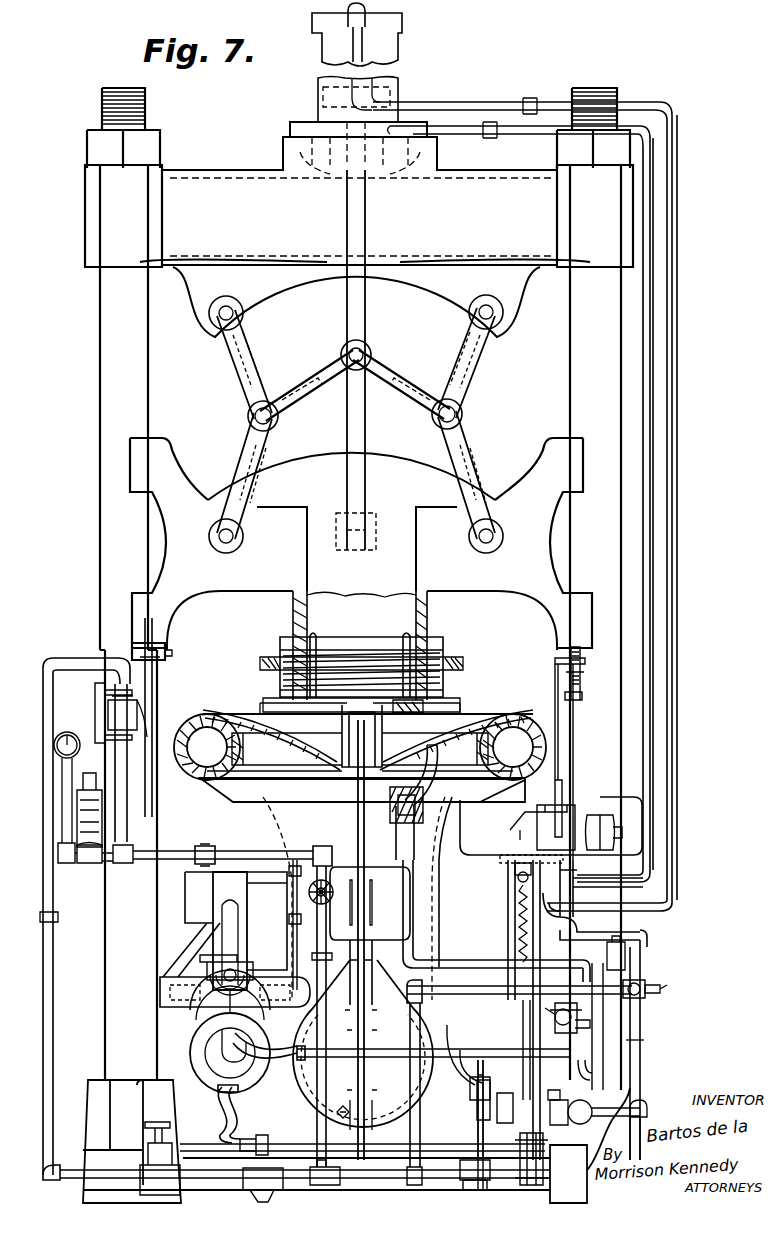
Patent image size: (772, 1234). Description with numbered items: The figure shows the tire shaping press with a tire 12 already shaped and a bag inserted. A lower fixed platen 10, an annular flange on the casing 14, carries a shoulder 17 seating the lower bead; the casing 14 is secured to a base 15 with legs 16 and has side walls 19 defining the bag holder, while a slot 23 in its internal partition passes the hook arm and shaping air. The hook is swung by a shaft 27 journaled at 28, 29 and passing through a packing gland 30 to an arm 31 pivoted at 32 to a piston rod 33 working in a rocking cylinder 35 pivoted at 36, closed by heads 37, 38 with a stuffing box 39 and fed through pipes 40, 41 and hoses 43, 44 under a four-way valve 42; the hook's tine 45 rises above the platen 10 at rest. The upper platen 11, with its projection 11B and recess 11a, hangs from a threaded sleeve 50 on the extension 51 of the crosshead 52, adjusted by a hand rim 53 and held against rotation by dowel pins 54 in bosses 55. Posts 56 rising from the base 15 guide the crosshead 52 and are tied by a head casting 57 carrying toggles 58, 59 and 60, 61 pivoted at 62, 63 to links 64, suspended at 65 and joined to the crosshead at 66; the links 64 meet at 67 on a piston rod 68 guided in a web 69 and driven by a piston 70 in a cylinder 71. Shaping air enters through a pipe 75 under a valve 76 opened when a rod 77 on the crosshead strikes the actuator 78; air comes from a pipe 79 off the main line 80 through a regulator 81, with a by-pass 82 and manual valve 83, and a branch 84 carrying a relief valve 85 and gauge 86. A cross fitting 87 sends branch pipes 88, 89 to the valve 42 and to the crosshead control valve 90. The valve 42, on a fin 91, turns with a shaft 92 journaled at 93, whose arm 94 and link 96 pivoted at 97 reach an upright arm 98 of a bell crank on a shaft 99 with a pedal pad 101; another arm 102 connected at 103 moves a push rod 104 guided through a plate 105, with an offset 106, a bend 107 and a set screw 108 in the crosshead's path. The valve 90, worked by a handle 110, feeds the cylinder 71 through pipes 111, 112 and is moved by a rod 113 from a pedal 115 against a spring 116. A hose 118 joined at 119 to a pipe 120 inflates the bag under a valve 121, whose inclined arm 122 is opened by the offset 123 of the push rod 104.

The lower fixed platen 10 is at (362, 790).
The upper movable platen 11 is at (465, 716).
The clearance recess 11a is at (384, 724).
The downward projection 11B is at (310, 772).
The tire 12 is at (535, 722).
The casing 14 is at (262, 822).
The base member 15 is at (294, 1190).
The supporting legs 16 is at (84, 1196).
The annular shoulder 17 is at (360, 749).
The side walls 19 is at (290, 958).
The central longitudinal slot 23 is at (354, 968).
The shaft 27 is at (236, 921).
The journal 28 is at (398, 930).
The journal 29 is at (313, 855).
The packing gland 30 is at (288, 912).
The arm 31 is at (240, 938).
The pivot connection 32 is at (193, 935).
The piston rod 33 is at (220, 964).
The rocking cylinder 35 is at (230, 1053).
The pivot support 36 is at (192, 1014).
The forward cylinder head 37 is at (192, 1037).
The rearward cylinder head 38 is at (192, 1058).
The stuffing box 39 is at (262, 1014).
The pipe 40 is at (390, 1140).
The pipe 41 is at (404, 1056).
The four-way valve 42 is at (568, 1080).
The flexible hose section 43 is at (225, 1141).
The flexible hose section 44 is at (260, 1095).
The upper tine 45 is at (335, 748).
The internally threaded sleeve 50 is at (444, 688).
The cylindrical extension 51 is at (292, 607).
The crosshead 52 is at (435, 590).
The hand rim 53 is at (430, 652).
The dowel pins 54 is at (400, 652).
The apertured bosses 55 is at (403, 640).
The upright posts 56 is at (570, 355).
The head casting 57 is at (365, 193).
The toggle member 58 is at (228, 372).
The toggle member 59 is at (235, 460).
The toggle member 60 is at (478, 381).
The toggle member 61 is at (450, 455).
The pivot 62 is at (248, 416).
The pivot 63 is at (462, 418).
The links 64 is at (320, 405).
The pivot 65 is at (209, 320).
The pivot connection 66 is at (220, 547).
The joint connection 67 is at (342, 350).
The piston rod 68 is at (347, 307).
The apertured web 69 is at (372, 548).
The piston 70 is at (398, 84).
The cylinder 71 is at (395, 52).
The pipe 75 is at (180, 842).
The valve 76 is at (108, 712).
The adjustable rod 77 is at (152, 680).
The actuating member 78 is at (145, 714).
The pipe 79 is at (92, 655).
The main supply line 80 is at (648, 984).
The pressure regulator 81 is at (160, 1158).
The by-pass pipe 82 is at (342, 1098).
The manually operated valve 83 is at (328, 1025).
The branch 84 is at (103, 865).
The relief valve 85 is at (98, 778).
The gauge 86 is at (66, 730).
The cross fitting 87 is at (641, 1013).
The branch pipe 88 is at (641, 1038).
The branch pipe 89 is at (645, 930).
The control valve 90 is at (565, 815).
The fin 91 is at (600, 1082).
The rod or shaft 92 is at (469, 1100).
The journal 93 is at (445, 1110).
The short radial arm 94 is at (464, 1057).
The link 96 is at (459, 1048).
The pivot connection 97 is at (476, 1078).
The upright arm 98 is at (422, 1172).
The shaft 99 is at (480, 1190).
The pedal pad 101 is at (463, 1192).
The radial arm 102 is at (503, 1090).
The connection 103 is at (548, 1096).
The push rod 104 is at (507, 918).
The fixed plate 105 is at (514, 870).
The offset 106 is at (518, 832).
The right-angled bend 107 is at (588, 663).
The set screw 108 is at (556, 654).
The pivoted handle 110 is at (563, 780).
The pipe 111 is at (680, 572).
The pipe 112 is at (655, 645).
The rod 113 is at (541, 1010).
The pedal 115 is at (519, 1150).
The tension spring 116 is at (518, 890).
The flexible hose 118 is at (414, 750).
The connection 119 is at (358, 792).
The air supply pipe 120 is at (398, 858).
The valve 121 is at (560, 1025).
The inclined arm 122 is at (553, 1010).
The offset portion 123 is at (552, 1027).